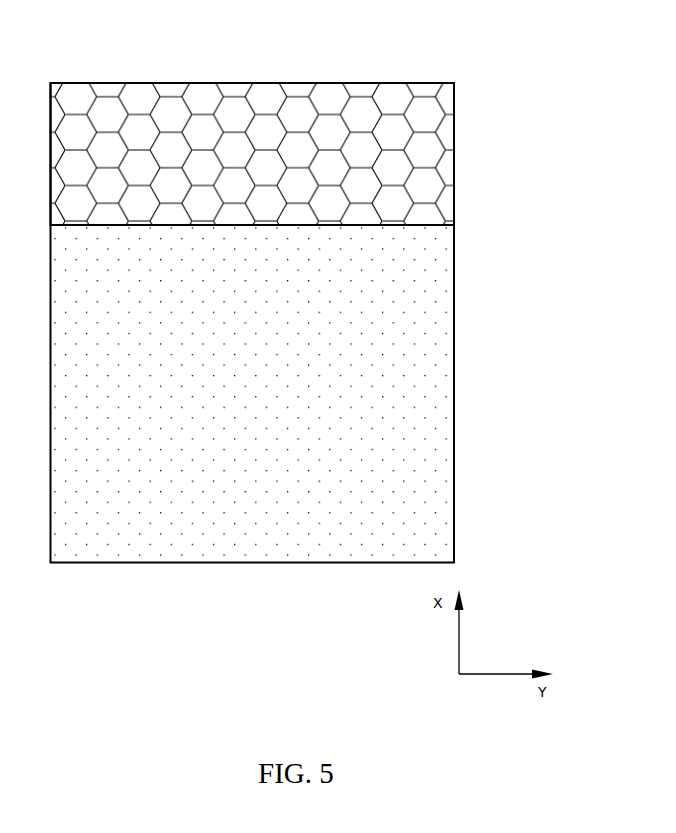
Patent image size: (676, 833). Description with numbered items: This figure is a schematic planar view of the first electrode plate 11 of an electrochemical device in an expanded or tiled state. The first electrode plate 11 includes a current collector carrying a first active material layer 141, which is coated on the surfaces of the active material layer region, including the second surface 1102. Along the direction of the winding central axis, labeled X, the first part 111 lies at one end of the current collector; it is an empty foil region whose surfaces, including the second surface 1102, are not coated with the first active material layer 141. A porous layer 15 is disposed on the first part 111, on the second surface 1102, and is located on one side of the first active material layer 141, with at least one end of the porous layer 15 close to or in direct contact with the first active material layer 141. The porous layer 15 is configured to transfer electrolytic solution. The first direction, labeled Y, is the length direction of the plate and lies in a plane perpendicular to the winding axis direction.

The first electrode plate 11 is at (377, 29).
The porous layer 15 is at (245, 107).
The first part 111 is at (455, 160).
The second surface 1102 is at (455, 267).
The first active material layer 141 is at (418, 330).